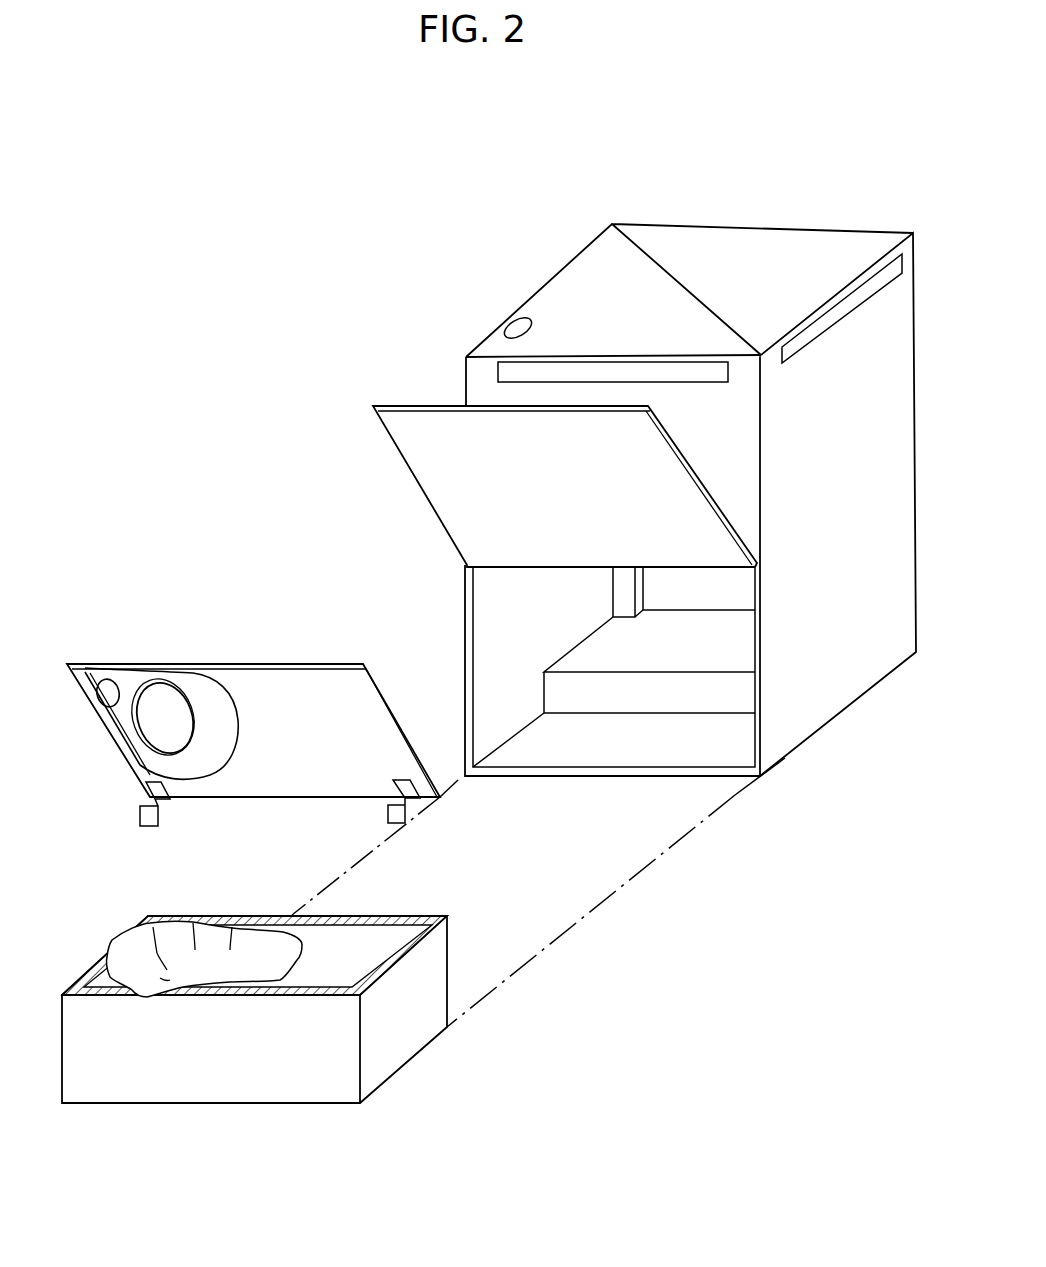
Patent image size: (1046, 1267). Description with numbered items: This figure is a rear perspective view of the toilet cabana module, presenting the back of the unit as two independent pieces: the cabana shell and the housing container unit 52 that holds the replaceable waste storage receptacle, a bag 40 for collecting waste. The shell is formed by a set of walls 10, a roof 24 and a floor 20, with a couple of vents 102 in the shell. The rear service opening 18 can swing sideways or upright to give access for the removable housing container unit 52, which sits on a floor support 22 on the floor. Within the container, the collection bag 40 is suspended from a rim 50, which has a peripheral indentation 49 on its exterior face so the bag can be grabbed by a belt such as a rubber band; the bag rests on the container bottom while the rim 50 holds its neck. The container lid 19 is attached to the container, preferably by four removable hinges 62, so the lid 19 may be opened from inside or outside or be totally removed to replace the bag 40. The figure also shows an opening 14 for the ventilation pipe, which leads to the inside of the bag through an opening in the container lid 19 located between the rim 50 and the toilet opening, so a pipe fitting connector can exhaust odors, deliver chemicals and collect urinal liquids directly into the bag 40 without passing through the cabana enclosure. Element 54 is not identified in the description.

The set of walls 10 is at (850, 645).
The opening for the ventilation pipe 14 is at (517, 322).
The service opening 18 is at (387, 450).
The container lid 19 is at (103, 693).
The floor 20 is at (673, 653).
The floor support 22 is at (612, 748).
The roof 24 is at (710, 232).
The bag 40 is at (303, 958).
The peripheral indentation 49 is at (220, 762).
The rim 50 is at (200, 673).
The housing container unit 52 is at (448, 953).
The drawer 54 is at (228, 662).
The removable hinges 62 is at (388, 828).
The vents 102 is at (498, 370).